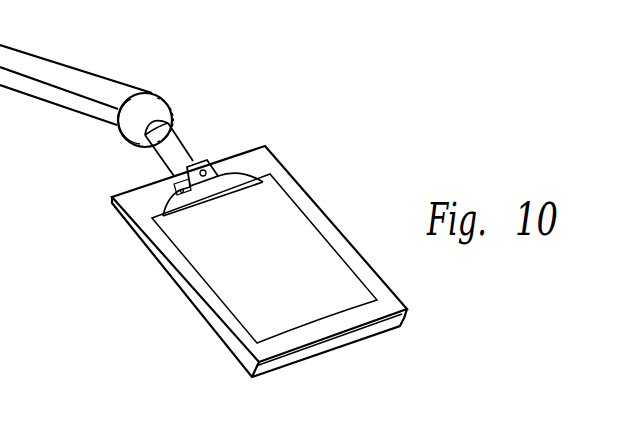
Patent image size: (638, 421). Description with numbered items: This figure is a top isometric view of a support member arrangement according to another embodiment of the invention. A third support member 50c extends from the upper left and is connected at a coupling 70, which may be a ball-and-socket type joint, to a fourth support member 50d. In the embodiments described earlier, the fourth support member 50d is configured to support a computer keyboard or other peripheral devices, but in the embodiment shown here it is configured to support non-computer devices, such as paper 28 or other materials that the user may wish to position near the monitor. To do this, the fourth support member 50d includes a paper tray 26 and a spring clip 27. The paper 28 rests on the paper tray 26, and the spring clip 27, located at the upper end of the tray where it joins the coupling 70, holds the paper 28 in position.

The third support member 50c is at (67, 66).
The coupling 70 is at (176, 95).
The spring clip 27 is at (216, 172).
The fourth support member 50d is at (255, 221).
The paper tray 26 is at (195, 317).
The paper 28 is at (193, 252).